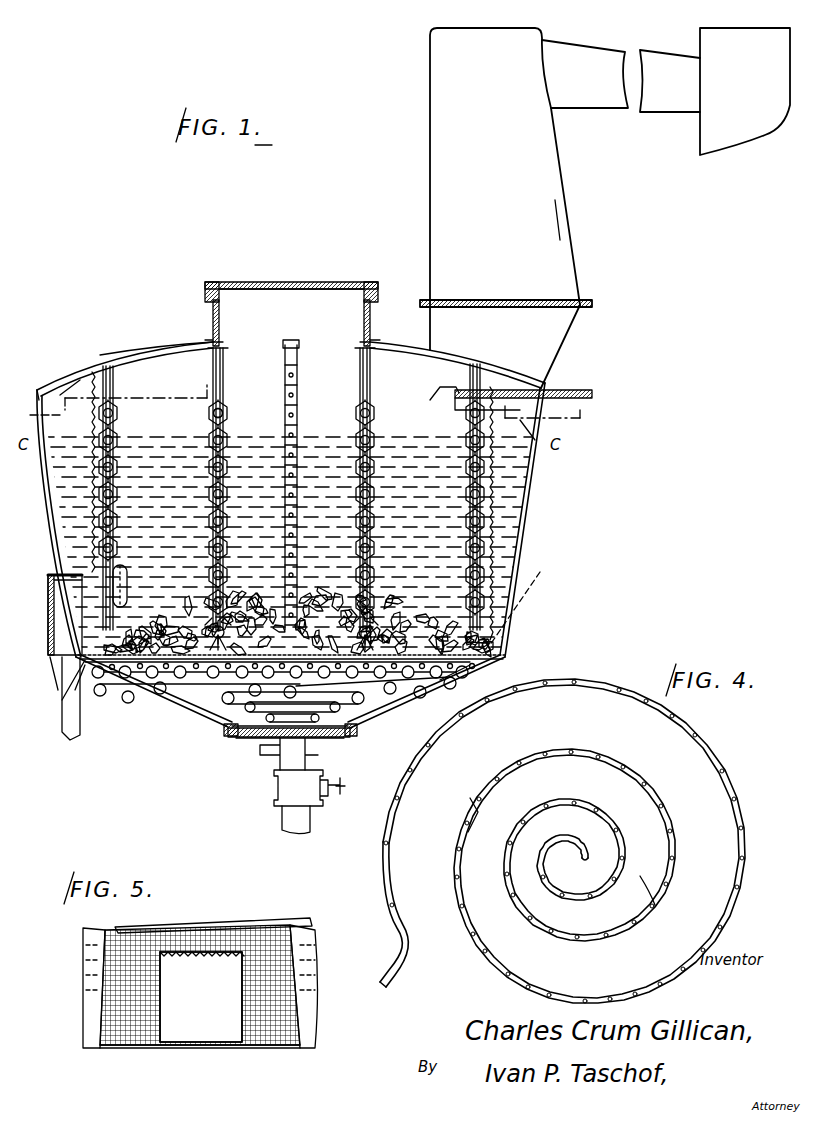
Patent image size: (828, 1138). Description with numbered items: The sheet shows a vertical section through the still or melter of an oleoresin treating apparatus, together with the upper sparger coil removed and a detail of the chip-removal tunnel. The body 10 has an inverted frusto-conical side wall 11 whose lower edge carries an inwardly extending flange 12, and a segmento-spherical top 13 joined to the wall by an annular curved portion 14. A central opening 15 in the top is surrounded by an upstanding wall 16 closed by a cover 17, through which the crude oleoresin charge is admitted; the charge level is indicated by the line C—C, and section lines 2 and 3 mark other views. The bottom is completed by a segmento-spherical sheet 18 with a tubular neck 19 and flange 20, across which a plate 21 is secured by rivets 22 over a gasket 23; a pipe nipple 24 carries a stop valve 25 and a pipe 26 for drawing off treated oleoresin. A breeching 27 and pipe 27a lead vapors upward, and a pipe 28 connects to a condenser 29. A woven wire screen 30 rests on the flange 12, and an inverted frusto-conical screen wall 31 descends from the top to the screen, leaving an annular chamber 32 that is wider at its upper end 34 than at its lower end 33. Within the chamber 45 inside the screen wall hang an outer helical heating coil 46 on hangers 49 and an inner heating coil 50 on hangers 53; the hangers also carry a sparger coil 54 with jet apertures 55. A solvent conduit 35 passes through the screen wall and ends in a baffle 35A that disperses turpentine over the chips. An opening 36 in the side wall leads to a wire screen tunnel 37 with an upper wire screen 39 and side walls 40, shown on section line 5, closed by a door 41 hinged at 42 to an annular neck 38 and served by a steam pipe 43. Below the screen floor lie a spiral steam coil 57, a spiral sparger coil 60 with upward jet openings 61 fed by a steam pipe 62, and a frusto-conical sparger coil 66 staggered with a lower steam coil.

In FIG. 1, the section line 2- 2 is at (20, 425).
In FIG. 1, the section line 3- 3 is at (26, 620).
In FIG. 1, the section line 5- 5 is at (90, 542).
In FIG. 1, the body or casing 10 is at (536, 531).
In FIG. 1, the side wall 11 is at (520, 575).
In FIG. 5, the side wall 11 is at (92, 1012).
In FIG. 1, the flange 12 is at (505, 657).
In FIG. 5, the flange 12 is at (130, 1050).
In FIG. 1, the top 13 is at (155, 350).
In FIG. 1, the annular curved portion 14 is at (40, 390).
In FIG. 1, the central opening 15 is at (256, 346).
In FIG. 1, the upstanding wall 16 is at (213, 311).
In FIG. 1, the cover 17 is at (255, 282).
In FIG. 1, the segmento-spherical sheet 18 is at (185, 700).
In FIG. 1, the tubular neck 19 is at (360, 712).
In FIG. 1, the flange 20 is at (350, 730).
In FIG. 1, the plate 21 is at (245, 740).
In FIG. 1, the rivets 22 is at (232, 738).
In FIG. 1, the gasket 23 is at (226, 735).
In FIG. 1, the pipe nipple 24 is at (308, 760).
In FIG. 1, the stop valve 25 is at (280, 790).
In FIG. 1, the pipe 26 is at (302, 820).
In FIG. 1, the breeching 27 is at (565, 338).
In FIG. 1, the pipe 27a is at (560, 230).
In FIG. 1, the pipe 28 is at (614, 108).
In FIG. 1, the condenser 29 is at (726, 130).
In FIG. 1, the screen 30 is at (364, 638).
In FIG. 5, the screen 30 is at (268, 1046).
In FIG. 1, the screen wall 31 is at (495, 512).
In FIG. 5, the screen wall 31 is at (284, 1008).
In FIG. 1, the annular chamber 32 is at (535, 465).
In FIG. 1, the lower end 33 is at (540, 572).
In FIG. 1, the upper end 34 is at (60, 390).
In FIG. 1, the conduit 35 is at (580, 392).
In FIG. 1, the baffle 35A is at (442, 382).
In FIG. 1, the opening 36 is at (60, 603).
In FIG. 1, the wire screen tunnel 37 is at (58, 690).
In FIG. 1, the annular neck 38 is at (62, 680).
In FIG. 1, the upper wire screen 39 is at (78, 560).
In FIG. 5, the upper wire screen 39 is at (198, 950).
In FIG. 1, the side walls 40 is at (120, 586).
In FIG. 5, the side walls 40 is at (160, 1040).
In FIG. 1, the door 41 is at (48, 581).
In FIG. 1, the hinge 42 is at (52, 572).
In FIG. 1, the steam pipe 43 is at (78, 700).
In FIG. 1, the chamber 45 is at (358, 390).
In FIG. 1, the helical coil 46 is at (101, 449).
In FIG. 5, the helical coil 46 is at (300, 922).
In FIG. 1, the hangers 49 is at (101, 470).
In FIG. 1, the heating coil 50 is at (228, 412).
In FIG. 1, the hangers 53 is at (210, 378).
In FIG. 1, the sparger coil 54 is at (345, 620).
In FIG. 1, the jet apertures 55 is at (292, 542).
In FIG. 1, the spiral steam coil 57 is at (205, 615).
In FIG. 1, the spiral sparger coil 60 is at (298, 622).
In FIG. 4, the spiral sparger coil 60 is at (712, 758).
In FIG. 4, the jet openings 61 is at (520, 828).
In FIG. 4, the steam pipe 62 is at (604, 888).
In FIG. 1, the sparger coil 66 is at (444, 690).